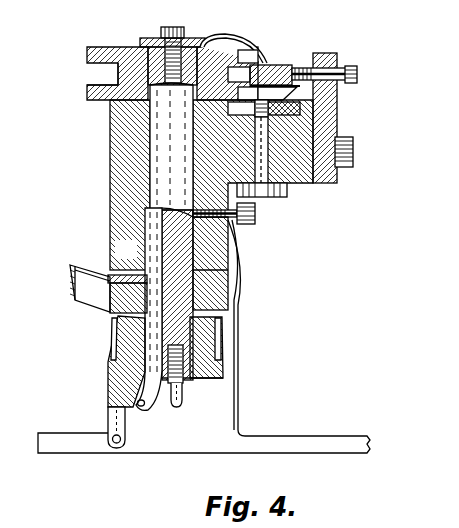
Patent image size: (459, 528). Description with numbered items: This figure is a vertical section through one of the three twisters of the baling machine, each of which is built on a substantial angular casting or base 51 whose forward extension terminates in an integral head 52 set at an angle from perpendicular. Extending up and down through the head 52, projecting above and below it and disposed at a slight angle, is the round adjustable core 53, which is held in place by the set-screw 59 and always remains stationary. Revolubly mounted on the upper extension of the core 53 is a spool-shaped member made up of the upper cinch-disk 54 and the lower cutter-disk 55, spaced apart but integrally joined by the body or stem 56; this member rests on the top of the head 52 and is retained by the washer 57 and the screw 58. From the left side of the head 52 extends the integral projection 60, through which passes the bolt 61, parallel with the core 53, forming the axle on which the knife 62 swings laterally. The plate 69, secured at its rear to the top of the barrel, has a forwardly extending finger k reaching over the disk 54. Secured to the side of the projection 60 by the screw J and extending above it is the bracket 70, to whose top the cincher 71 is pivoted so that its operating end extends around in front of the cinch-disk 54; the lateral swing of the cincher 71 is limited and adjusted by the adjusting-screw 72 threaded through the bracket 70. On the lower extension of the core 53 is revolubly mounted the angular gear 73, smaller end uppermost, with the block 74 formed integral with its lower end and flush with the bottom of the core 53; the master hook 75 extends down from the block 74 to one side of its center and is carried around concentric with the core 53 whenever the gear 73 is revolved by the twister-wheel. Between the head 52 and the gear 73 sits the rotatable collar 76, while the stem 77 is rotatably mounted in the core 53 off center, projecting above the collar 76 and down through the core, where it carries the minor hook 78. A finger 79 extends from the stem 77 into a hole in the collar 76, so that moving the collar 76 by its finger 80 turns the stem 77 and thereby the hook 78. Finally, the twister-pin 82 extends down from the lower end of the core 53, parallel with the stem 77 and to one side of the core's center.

The base 51 is at (239, 418).
The head 52 is at (110, 136).
The core 53 is at (145, 180).
The cinch-disk 54 is at (87, 50).
The cutter-disk 55 is at (88, 97).
The body or stem 56 is at (118, 72).
The washer 57 is at (142, 42).
The screw 58 is at (167, 27).
The set-screw 59 is at (255, 218).
The projection 60 is at (300, 185).
The bolt 61 is at (288, 197).
The knife 62 is at (300, 108).
The plate 69 is at (278, 53).
The bracket 70 is at (327, 53).
The cincher 71 is at (281, 64).
The adjusting-screw 72 is at (348, 68).
The angular gear 73 is at (213, 345).
The block 74 is at (217, 375).
The master hook 75 is at (108, 420).
The collar 76 is at (230, 292).
The stem 77 is at (147, 232).
The minor hook 78 is at (147, 412).
The finger 79 is at (130, 275).
The finger 80 is at (74, 302).
The twister-pin 82 is at (184, 406).
The finger k is at (218, 40).
The screw J is at (347, 160).